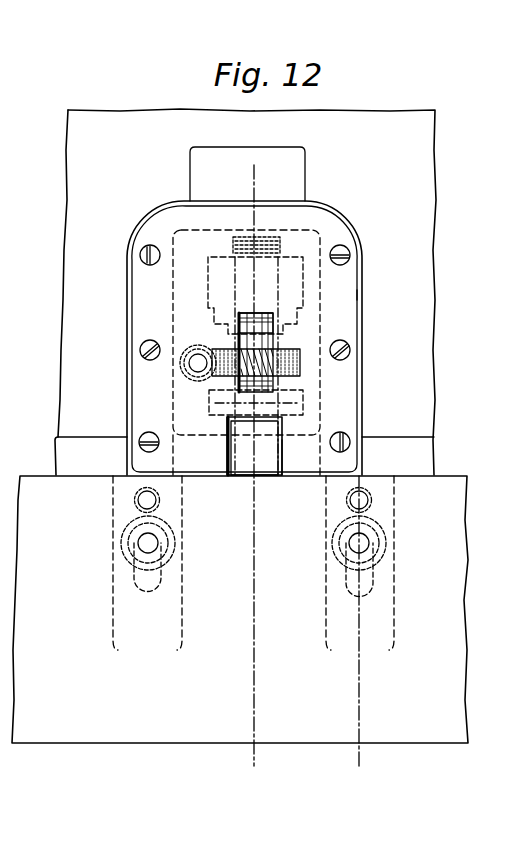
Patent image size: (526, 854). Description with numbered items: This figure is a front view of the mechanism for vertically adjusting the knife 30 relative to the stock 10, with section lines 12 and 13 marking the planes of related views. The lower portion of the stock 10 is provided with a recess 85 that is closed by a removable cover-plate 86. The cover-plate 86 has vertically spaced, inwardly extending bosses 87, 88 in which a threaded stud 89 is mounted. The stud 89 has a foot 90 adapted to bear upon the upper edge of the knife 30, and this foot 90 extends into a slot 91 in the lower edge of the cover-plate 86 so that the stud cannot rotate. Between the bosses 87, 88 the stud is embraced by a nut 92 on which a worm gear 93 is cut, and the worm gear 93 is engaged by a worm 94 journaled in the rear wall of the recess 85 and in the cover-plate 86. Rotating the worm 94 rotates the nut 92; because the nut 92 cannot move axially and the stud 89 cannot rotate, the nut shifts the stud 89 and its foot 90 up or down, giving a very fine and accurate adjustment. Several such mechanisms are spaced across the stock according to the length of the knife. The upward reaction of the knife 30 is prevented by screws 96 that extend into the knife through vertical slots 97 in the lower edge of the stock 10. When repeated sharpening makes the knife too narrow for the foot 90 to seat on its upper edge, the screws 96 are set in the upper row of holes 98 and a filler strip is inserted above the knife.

The stock 10 is at (433, 222).
The section line 12- 12 is at (270, 181).
The section line 13- 13 is at (378, 483).
The knife 30 is at (466, 603).
The recess 85 is at (127, 292).
The cover-plate 86 is at (348, 297).
The boss 87 is at (218, 292).
The boss 88 is at (216, 406).
The threaded stud 89 is at (232, 244).
The foot 90 is at (254, 446).
The slot 91 is at (283, 446).
The nut 92 is at (222, 331).
The worm gear 93 is at (300, 373).
The worm 94 is at (184, 367).
The screws 96 is at (163, 543).
The vertical slots 97 is at (158, 582).
The upper row of holes 98 is at (158, 500).